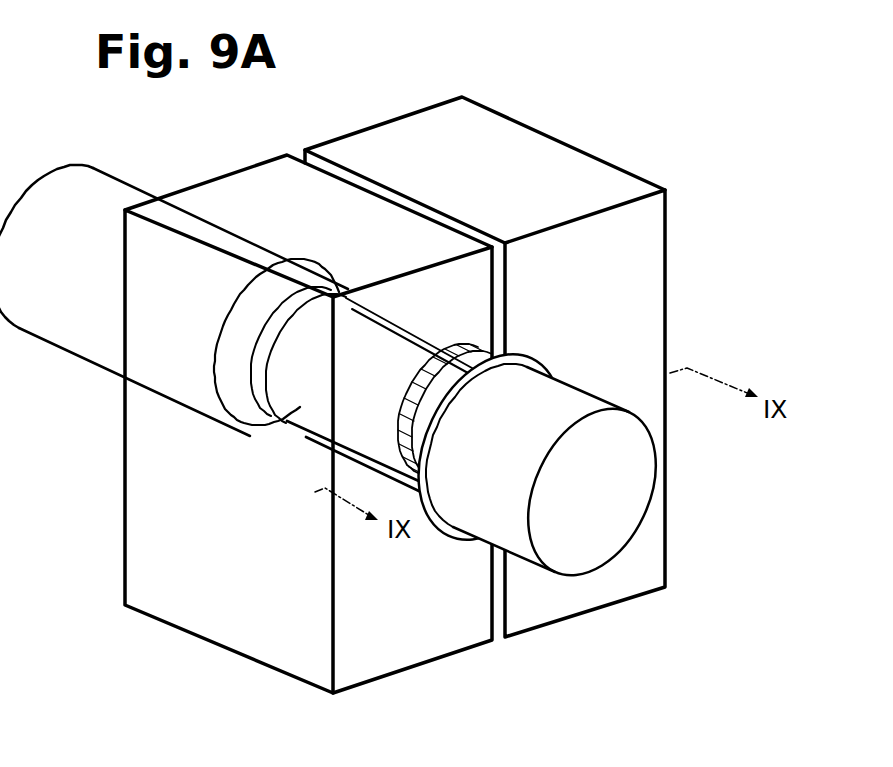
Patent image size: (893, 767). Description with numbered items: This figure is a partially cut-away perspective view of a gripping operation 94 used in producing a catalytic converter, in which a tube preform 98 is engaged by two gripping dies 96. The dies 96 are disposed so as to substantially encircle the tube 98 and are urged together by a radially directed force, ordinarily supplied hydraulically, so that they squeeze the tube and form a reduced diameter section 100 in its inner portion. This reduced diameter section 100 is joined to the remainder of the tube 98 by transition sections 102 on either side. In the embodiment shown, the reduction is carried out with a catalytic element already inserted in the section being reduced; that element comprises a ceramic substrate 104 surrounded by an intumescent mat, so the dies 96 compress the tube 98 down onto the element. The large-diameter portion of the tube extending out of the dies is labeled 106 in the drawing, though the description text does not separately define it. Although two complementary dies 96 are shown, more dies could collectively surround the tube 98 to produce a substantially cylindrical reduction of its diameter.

The gripping operation 94 is at (439, 395).
The gripping dies 96 is at (543, 133).
The preform 98 is at (595, 393).
The reduced diameter section 100 is at (320, 445).
The transition sections 102 is at (262, 427).
The ceramic substrate 104 is at (407, 407).
The cylinder 106 is at (38, 295).